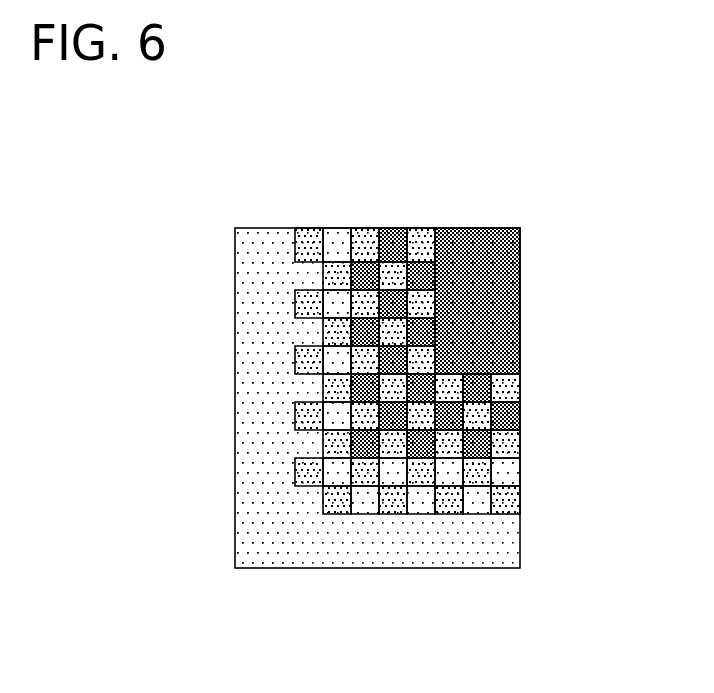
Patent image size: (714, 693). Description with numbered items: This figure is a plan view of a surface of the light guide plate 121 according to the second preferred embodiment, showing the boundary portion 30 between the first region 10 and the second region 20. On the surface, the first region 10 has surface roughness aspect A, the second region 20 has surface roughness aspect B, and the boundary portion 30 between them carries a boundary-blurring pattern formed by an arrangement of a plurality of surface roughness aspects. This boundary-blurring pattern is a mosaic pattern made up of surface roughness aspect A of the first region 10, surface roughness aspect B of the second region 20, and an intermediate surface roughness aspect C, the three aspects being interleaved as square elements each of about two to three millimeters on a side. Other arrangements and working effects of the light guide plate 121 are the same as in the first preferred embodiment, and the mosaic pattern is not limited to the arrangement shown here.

The light guide plate 121 is at (438, 190).
The first region 10 is at (295, 228).
The boundary portion 30 is at (463, 228).
The second region 20 is at (520, 228).
The surface roughness aspect A is at (363, 560).
The surface roughness aspect B is at (518, 290).
The surface roughness aspect C is at (513, 498).